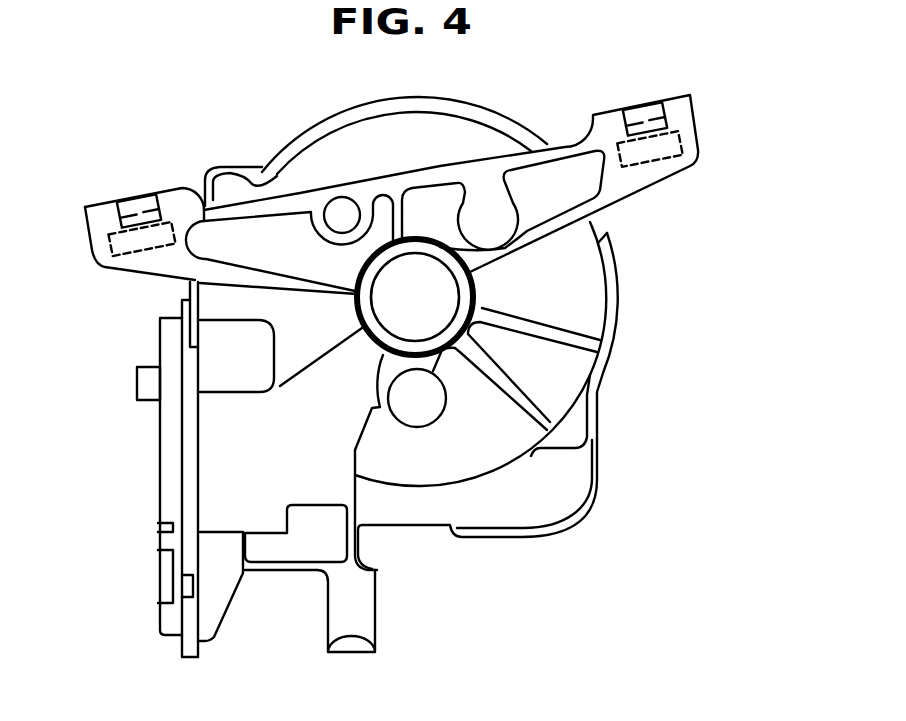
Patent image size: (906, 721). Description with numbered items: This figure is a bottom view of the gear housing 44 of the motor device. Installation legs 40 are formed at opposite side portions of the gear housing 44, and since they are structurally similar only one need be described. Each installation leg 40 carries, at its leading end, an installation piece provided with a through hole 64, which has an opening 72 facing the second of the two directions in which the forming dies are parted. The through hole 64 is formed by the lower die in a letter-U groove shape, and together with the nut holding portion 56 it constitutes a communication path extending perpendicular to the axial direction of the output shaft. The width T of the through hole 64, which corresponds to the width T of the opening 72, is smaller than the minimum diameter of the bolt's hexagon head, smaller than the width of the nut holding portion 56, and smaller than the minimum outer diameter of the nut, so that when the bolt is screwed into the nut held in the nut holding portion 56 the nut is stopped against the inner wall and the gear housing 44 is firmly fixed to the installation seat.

The installation leg 40 is at (91, 258).
The gear housing 44 is at (528, 539).
The nut holding portion 56 is at (148, 240).
The through hole 64 is at (138, 195).
The opening 72 is at (131, 197).
The width T is at (132, 257).